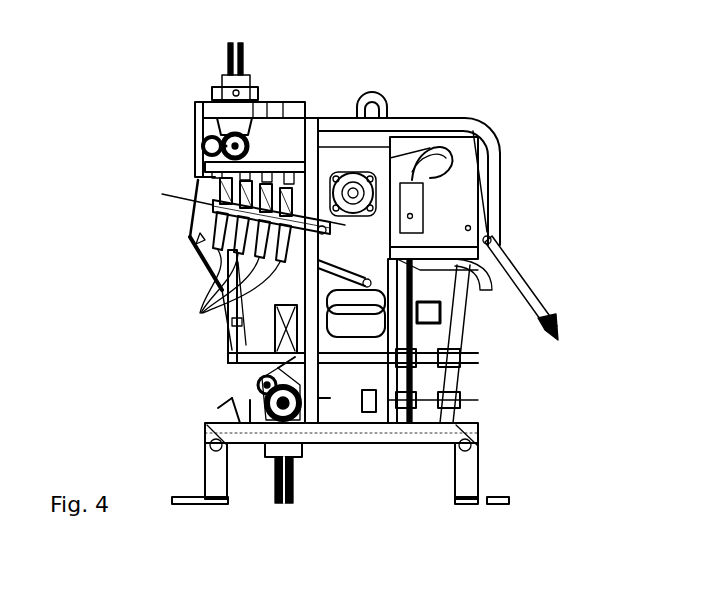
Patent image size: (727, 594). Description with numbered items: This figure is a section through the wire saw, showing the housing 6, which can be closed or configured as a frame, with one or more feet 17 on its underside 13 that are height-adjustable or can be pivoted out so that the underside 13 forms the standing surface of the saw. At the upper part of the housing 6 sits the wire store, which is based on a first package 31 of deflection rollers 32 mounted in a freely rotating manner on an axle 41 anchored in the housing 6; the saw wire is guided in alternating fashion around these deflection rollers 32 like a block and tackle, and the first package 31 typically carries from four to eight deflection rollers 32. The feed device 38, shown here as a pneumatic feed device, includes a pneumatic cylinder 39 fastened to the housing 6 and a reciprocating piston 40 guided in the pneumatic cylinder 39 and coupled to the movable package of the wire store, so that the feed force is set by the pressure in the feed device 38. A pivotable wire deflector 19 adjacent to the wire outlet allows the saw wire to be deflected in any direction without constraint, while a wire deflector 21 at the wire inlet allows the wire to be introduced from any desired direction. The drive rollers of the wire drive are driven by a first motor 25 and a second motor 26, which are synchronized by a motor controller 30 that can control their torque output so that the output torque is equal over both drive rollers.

The housing 6 is at (313, 152).
The underside 13 is at (337, 433).
The feet 17 is at (217, 483).
The wire deflector 19 is at (233, 70).
The wire deflector 21 is at (285, 485).
The first motor 25 is at (355, 328).
The second motor 26 is at (372, 302).
The motor controller 30 is at (430, 313).
The first package 31 is at (196, 240).
The deflection rollers 32 is at (200, 313).
The feed device 38 is at (468, 52).
The pneumatic cylinder 39 is at (360, 187).
The reciprocating piston 40 is at (375, 178).
The axle 41 is at (182, 195).